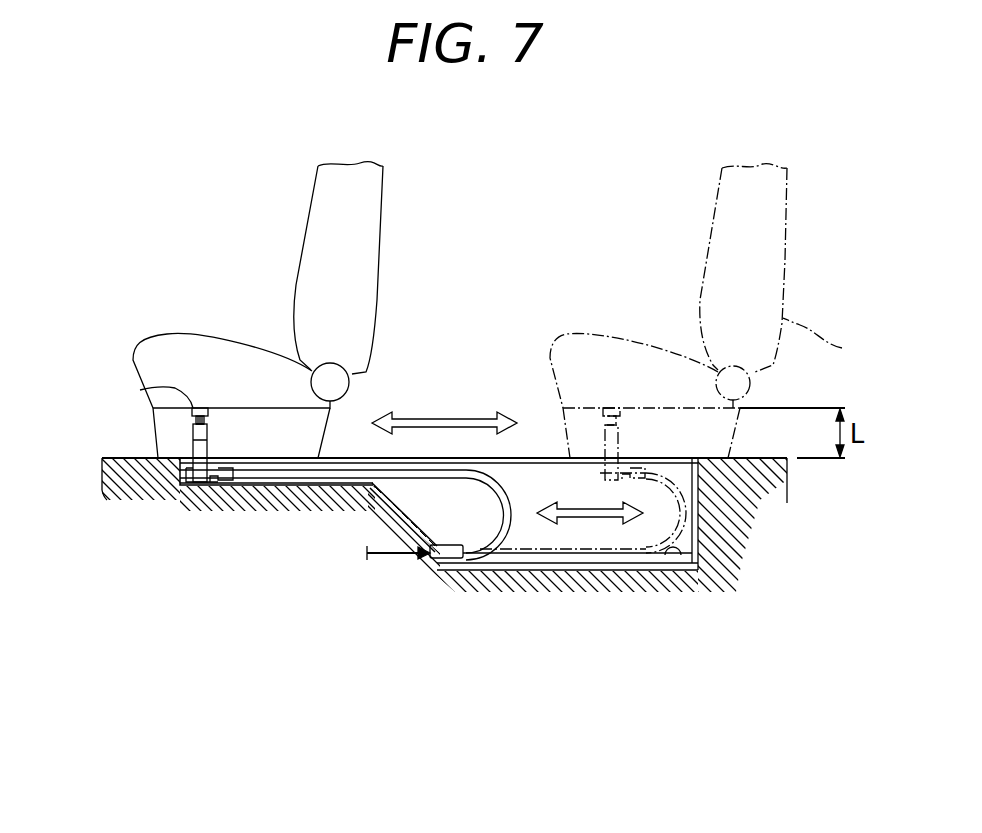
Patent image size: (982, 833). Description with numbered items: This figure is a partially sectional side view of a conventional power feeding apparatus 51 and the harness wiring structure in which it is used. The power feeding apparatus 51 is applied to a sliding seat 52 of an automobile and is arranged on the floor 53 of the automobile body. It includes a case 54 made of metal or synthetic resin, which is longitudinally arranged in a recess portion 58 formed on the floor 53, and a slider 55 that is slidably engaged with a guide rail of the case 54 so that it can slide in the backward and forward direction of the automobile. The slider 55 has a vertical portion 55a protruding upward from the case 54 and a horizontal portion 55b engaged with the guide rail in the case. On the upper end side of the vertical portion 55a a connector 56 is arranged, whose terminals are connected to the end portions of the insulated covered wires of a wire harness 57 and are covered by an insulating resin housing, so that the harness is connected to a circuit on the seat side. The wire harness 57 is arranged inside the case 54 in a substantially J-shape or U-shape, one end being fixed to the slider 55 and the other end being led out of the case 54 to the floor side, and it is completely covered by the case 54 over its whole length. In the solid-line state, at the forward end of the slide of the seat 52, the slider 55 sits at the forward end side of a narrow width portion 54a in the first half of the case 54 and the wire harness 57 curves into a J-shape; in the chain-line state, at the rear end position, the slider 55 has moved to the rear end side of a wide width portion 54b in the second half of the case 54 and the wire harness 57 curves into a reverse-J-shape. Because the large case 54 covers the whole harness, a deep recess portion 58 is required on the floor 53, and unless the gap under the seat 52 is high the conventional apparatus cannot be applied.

The power feeding apparatus 51 is at (389, 509).
The sliding seat 52 is at (385, 340).
The floor 53 is at (128, 458).
The case 54 is at (439, 558).
The narrow width portion 54a is at (313, 492).
The wide width portion 54b is at (560, 533).
The slider 55 is at (228, 500).
The vertical portion 55a is at (207, 445).
The horizontal portion 55b is at (232, 488).
The connector 56 is at (197, 410).
The wire harness 57 is at (508, 556).
The recess portion 58 is at (686, 572).